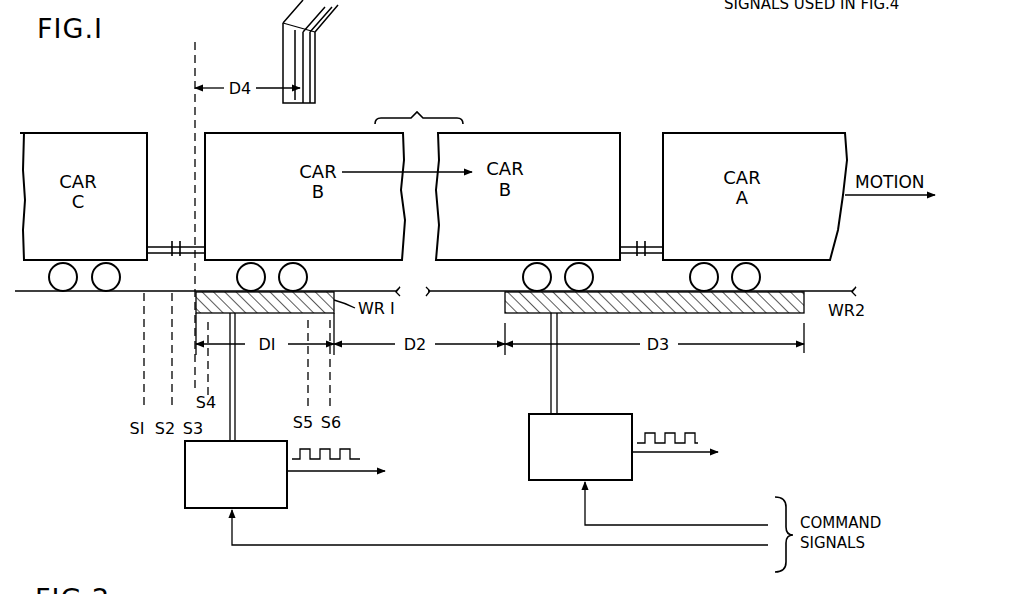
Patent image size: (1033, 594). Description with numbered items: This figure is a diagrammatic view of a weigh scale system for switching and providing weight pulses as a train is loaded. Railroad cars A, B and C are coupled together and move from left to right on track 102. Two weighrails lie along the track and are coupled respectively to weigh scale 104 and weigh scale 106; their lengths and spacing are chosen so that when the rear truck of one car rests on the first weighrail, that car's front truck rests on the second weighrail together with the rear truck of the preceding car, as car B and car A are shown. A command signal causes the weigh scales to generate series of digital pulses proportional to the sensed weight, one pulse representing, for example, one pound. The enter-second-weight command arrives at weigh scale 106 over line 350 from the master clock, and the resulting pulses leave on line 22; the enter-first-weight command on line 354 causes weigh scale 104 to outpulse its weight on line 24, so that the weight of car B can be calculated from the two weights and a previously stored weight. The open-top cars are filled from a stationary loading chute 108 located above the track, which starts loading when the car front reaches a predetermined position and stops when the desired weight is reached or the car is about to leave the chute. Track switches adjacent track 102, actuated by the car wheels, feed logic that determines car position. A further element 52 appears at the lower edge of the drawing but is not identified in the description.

The track 102 is at (128, 293).
The weigh scale 104 is at (185, 472).
The weigh scale 106 is at (529, 447).
The loading chute 108 is at (316, 66).
The line 22 is at (660, 455).
The line 24 is at (330, 475).
The line 350 is at (670, 525).
The line 354 is at (665, 545).
The signal line 52 is at (900, 593).